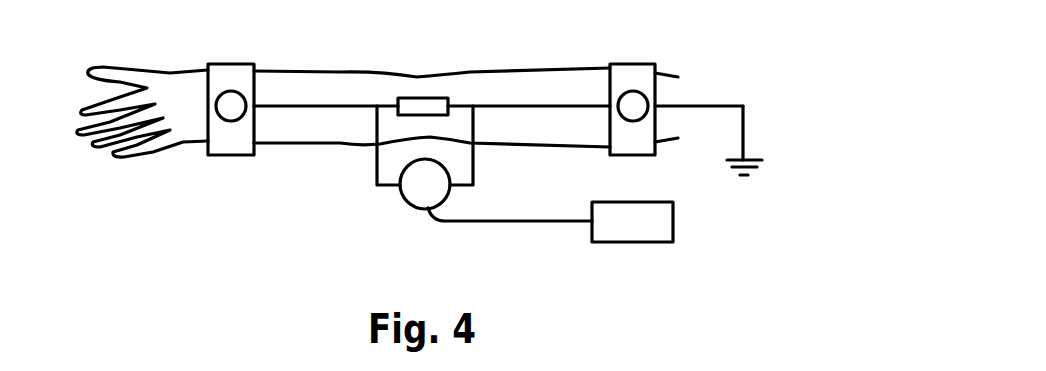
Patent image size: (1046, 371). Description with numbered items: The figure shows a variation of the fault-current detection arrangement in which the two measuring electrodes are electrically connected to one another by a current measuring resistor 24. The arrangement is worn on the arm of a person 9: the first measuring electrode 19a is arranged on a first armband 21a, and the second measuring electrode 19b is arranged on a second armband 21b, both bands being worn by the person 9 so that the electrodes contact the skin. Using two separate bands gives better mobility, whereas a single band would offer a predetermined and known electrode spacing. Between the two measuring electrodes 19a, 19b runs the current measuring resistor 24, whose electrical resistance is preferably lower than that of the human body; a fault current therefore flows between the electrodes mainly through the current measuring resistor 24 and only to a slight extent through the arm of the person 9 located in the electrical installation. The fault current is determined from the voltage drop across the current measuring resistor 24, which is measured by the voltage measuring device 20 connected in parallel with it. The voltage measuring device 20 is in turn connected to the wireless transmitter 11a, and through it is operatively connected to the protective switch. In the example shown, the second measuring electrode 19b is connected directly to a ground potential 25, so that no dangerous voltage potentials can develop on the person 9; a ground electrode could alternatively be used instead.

The person 9 is at (550, 83).
The first armband 21a is at (227, 78).
The first measuring electrode 19a is at (231, 108).
The second armband 21b is at (633, 78).
The second measuring electrode 19b is at (635, 107).
The current measuring resistor 24 is at (412, 100).
The voltage measuring device 20 is at (410, 197).
The wireless transmitter 11a is at (660, 223).
The ground potential 25 is at (748, 135).